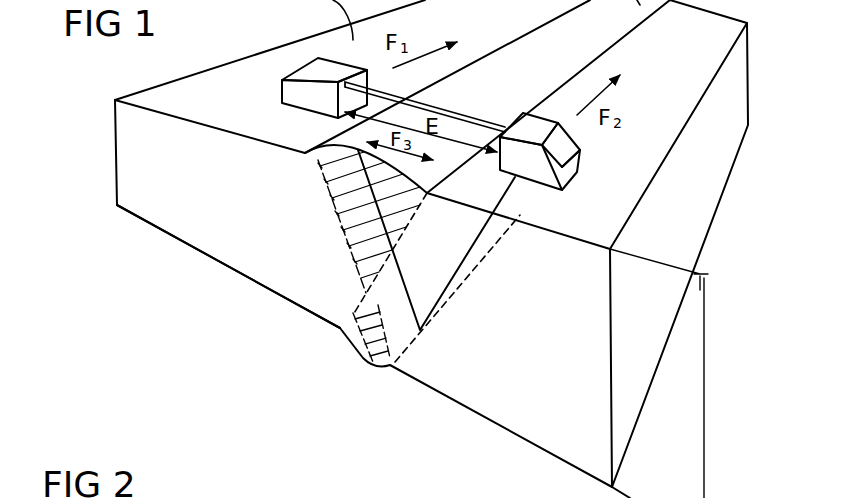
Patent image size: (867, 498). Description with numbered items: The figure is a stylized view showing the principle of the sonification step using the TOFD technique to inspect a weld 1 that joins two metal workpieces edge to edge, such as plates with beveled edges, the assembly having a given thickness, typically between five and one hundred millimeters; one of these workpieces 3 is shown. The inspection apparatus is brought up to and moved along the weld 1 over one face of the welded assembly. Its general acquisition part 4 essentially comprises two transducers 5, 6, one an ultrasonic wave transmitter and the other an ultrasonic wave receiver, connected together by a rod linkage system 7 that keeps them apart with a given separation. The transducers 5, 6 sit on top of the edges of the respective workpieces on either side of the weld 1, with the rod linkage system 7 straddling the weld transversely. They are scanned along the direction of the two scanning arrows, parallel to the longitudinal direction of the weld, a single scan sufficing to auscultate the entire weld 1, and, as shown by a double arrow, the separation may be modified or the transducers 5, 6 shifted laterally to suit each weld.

The weld 1 is at (373, 367).
The metal workpiece 3 is at (642, 362).
The acquisition part 4 is at (485, 96).
The transducer 5 is at (313, 65).
The transducer 6 is at (578, 168).
The rod linkage system 7 is at (255, 258).